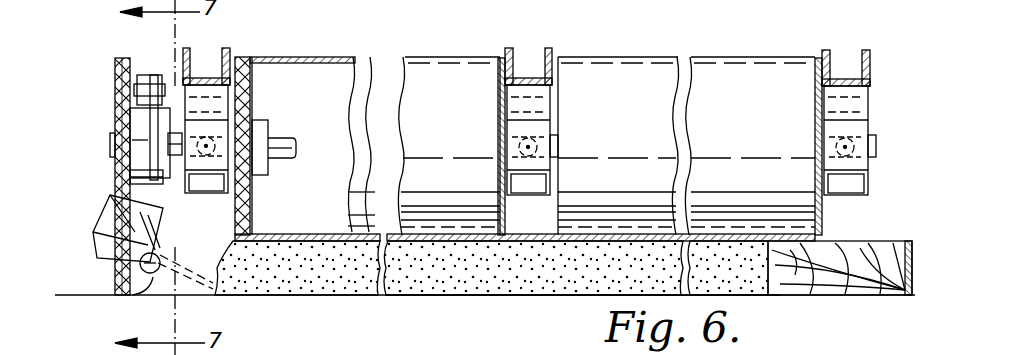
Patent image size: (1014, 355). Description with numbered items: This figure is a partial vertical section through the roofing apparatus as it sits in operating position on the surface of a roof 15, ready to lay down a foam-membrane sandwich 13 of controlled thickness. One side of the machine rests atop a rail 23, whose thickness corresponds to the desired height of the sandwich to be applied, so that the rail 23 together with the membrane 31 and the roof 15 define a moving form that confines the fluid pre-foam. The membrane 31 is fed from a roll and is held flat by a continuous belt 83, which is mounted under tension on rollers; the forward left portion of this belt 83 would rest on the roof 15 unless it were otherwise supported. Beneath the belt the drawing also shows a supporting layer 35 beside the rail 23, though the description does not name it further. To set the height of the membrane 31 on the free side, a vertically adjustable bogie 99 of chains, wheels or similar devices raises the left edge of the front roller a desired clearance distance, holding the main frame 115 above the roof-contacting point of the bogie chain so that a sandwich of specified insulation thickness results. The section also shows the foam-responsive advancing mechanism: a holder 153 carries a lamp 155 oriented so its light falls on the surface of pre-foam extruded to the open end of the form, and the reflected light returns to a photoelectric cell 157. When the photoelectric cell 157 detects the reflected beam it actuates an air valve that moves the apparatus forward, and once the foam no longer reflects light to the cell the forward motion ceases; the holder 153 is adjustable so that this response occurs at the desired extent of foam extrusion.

The foam-membrane sandwich 13 is at (548, 297).
The roof 15 is at (72, 292).
The rail 23 is at (885, 240).
The membrane 31 is at (313, 241).
The concrete pad 35 is at (367, 289).
The continuous belt 83 is at (330, 234).
The bogie 99 is at (112, 70).
The main frame 115 is at (232, 50).
The holder 153 is at (107, 213).
The lamp 155 is at (160, 248).
The photoelectric cell 157 is at (133, 295).